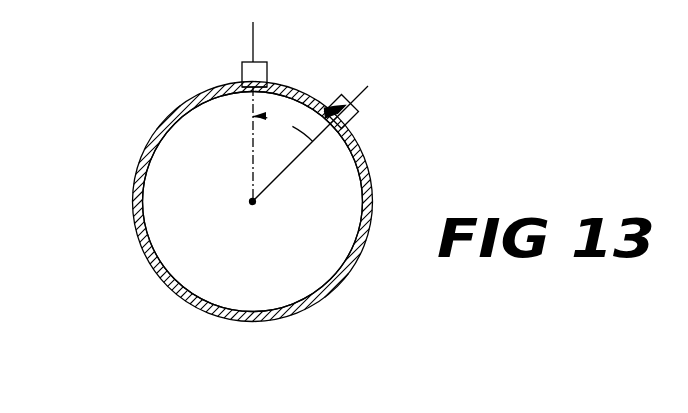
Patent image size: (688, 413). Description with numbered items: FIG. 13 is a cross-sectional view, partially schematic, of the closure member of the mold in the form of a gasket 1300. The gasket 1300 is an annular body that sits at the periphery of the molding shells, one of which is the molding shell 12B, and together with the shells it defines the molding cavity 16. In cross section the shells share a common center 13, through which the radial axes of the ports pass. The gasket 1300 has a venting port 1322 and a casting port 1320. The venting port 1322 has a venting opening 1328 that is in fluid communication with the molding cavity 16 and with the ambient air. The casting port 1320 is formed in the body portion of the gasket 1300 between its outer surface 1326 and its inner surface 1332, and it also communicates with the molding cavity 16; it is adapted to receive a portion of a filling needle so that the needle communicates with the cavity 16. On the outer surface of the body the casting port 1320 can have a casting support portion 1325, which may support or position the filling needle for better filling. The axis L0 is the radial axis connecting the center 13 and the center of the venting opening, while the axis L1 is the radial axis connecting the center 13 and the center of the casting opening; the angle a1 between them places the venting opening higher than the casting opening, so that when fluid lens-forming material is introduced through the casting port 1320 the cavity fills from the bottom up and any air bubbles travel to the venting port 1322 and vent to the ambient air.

The gasket 1300 is at (212, 195).
The venting port 1322 is at (242, 73).
The venting opening 1328 is at (249, 90).
The casting port 1320 is at (374, 143).
The casting support portion 1325 is at (355, 123).
The outer surface 1326 is at (150, 267).
The inner surface 1332 is at (311, 297).
The molding cavity 16 is at (152, 210).
The molding shell 12B is at (241, 264).
The center 13 is at (256, 204).
The axis L0 is at (253, 52).
The axis L1 is at (358, 102).
The angle α a1 is at (283, 123).